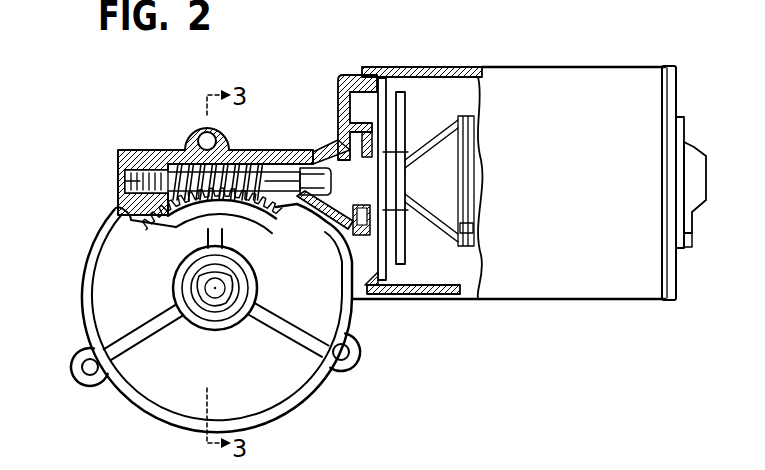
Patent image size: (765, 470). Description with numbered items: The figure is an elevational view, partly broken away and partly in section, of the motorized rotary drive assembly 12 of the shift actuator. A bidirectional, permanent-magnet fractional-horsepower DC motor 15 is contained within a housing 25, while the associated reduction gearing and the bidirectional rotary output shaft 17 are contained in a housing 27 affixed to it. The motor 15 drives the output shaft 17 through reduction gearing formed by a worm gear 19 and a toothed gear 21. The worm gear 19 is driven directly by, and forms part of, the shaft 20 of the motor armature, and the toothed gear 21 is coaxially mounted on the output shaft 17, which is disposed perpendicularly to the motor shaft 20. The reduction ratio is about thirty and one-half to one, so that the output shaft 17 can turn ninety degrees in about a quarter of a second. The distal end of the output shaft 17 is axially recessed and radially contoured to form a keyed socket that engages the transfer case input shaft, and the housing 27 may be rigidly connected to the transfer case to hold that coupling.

The motorized rotary drive assembly 12 is at (192, 88).
The DC motor 15 is at (580, 72).
The output shaft 17 is at (222, 307).
The worm gear 19 is at (249, 151).
The armature shaft 20 is at (313, 170).
The toothed gear 21 is at (176, 214).
The motor housing 25 is at (450, 72).
The gear housing 27 is at (117, 293).